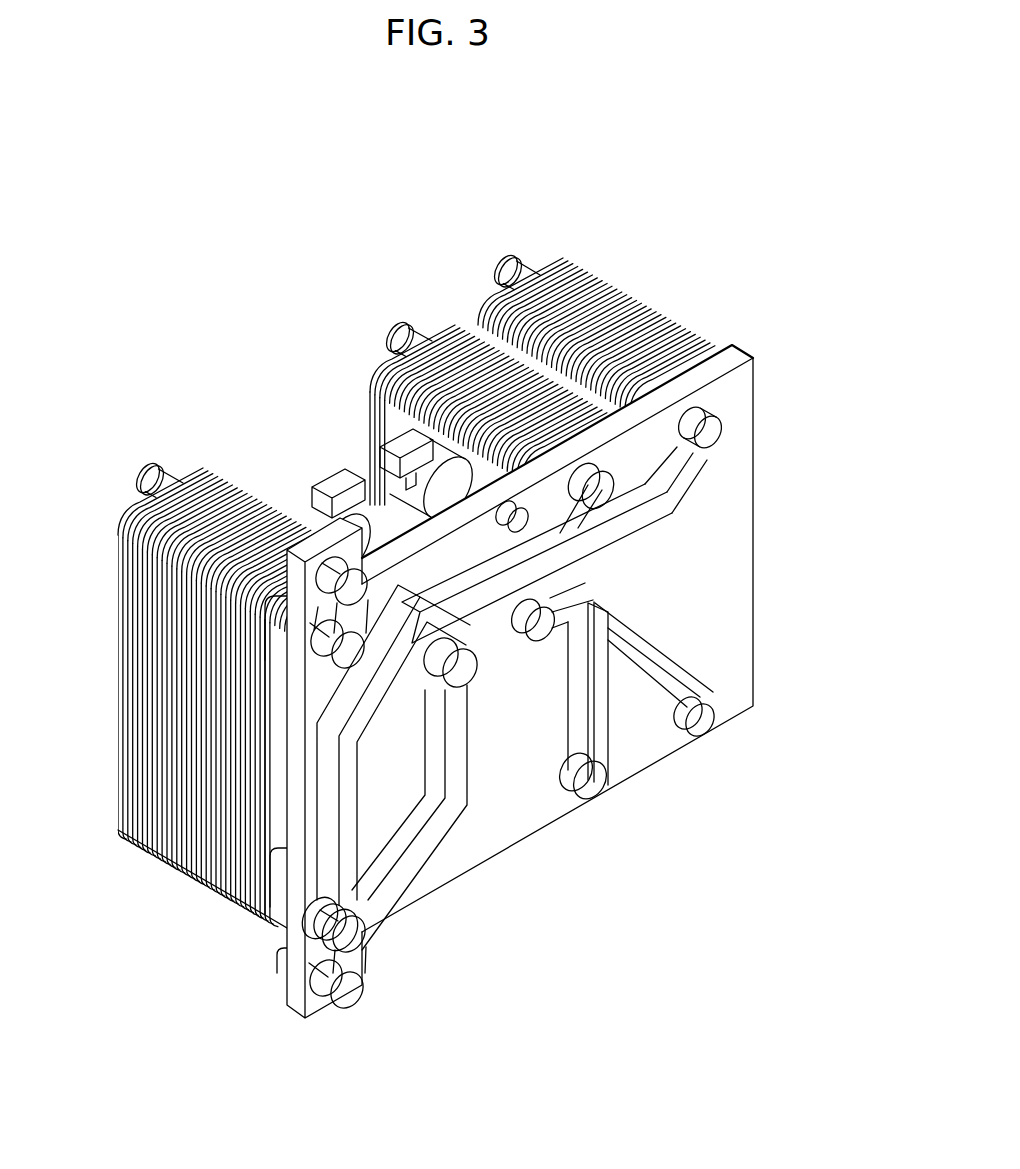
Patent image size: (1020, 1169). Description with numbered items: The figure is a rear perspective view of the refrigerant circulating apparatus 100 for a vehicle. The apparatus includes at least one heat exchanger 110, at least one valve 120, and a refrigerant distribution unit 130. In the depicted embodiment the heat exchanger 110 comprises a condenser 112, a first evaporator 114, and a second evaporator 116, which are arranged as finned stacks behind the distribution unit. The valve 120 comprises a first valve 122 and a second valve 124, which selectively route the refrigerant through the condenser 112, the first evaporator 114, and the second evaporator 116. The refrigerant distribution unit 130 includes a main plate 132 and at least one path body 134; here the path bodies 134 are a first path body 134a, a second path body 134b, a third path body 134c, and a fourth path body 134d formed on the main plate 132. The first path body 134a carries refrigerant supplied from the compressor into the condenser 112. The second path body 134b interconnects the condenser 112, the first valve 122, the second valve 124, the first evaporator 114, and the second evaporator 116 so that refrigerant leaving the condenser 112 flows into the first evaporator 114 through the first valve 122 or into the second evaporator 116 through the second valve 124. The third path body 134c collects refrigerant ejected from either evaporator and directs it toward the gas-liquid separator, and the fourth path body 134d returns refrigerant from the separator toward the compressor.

The refrigerant circulating apparatus 100 is at (360, 153).
The heat exchanger 110 is at (97, 163).
The condenser 112 is at (140, 607).
The first evaporator 114 is at (455, 320).
The second evaporator 116 is at (650, 233).
The valve 120 is at (300, 316).
The first valve 122 is at (455, 470).
The second valve 124 is at (333, 478).
The refrigerant distribution unit 130 is at (758, 343).
The main plate 132 is at (752, 398).
The path body 134 is at (97, 283).
The first path body 134a is at (345, 648).
The second path body 134b is at (477, 620).
The third path body 134c is at (597, 740).
The fourth path body 134d is at (423, 858).